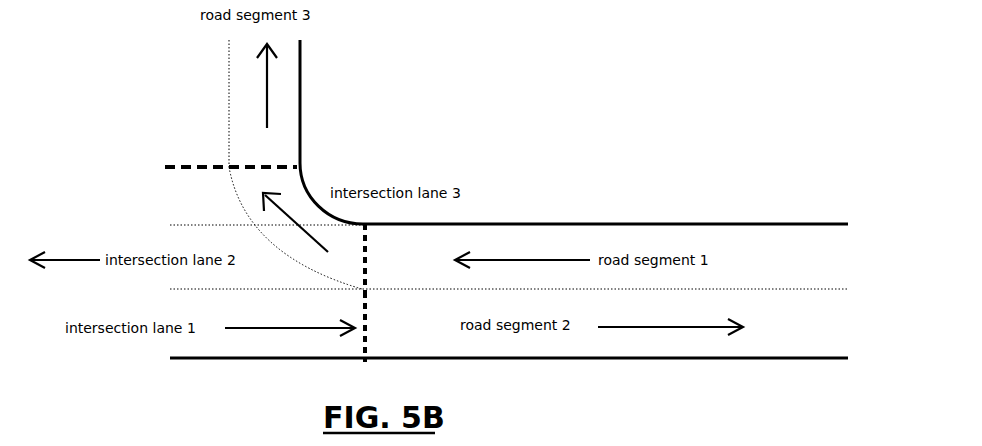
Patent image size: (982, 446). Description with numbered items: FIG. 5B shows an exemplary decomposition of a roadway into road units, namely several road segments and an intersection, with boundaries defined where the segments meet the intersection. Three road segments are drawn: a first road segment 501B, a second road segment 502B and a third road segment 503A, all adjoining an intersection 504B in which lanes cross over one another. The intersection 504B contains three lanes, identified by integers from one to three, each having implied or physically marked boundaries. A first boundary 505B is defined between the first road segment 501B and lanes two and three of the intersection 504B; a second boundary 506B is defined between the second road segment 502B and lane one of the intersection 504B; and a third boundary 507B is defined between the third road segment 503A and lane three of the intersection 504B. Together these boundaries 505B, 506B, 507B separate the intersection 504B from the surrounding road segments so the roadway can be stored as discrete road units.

The road segment 1 501B is at (722, 214).
The road segment 2 502B is at (674, 375).
The road segment 3 503A is at (316, 68).
The intersection 504B is at (198, 378).
The first boundary 505B is at (368, 248).
The second boundary 506B is at (368, 330).
The third boundary 507B is at (283, 163).